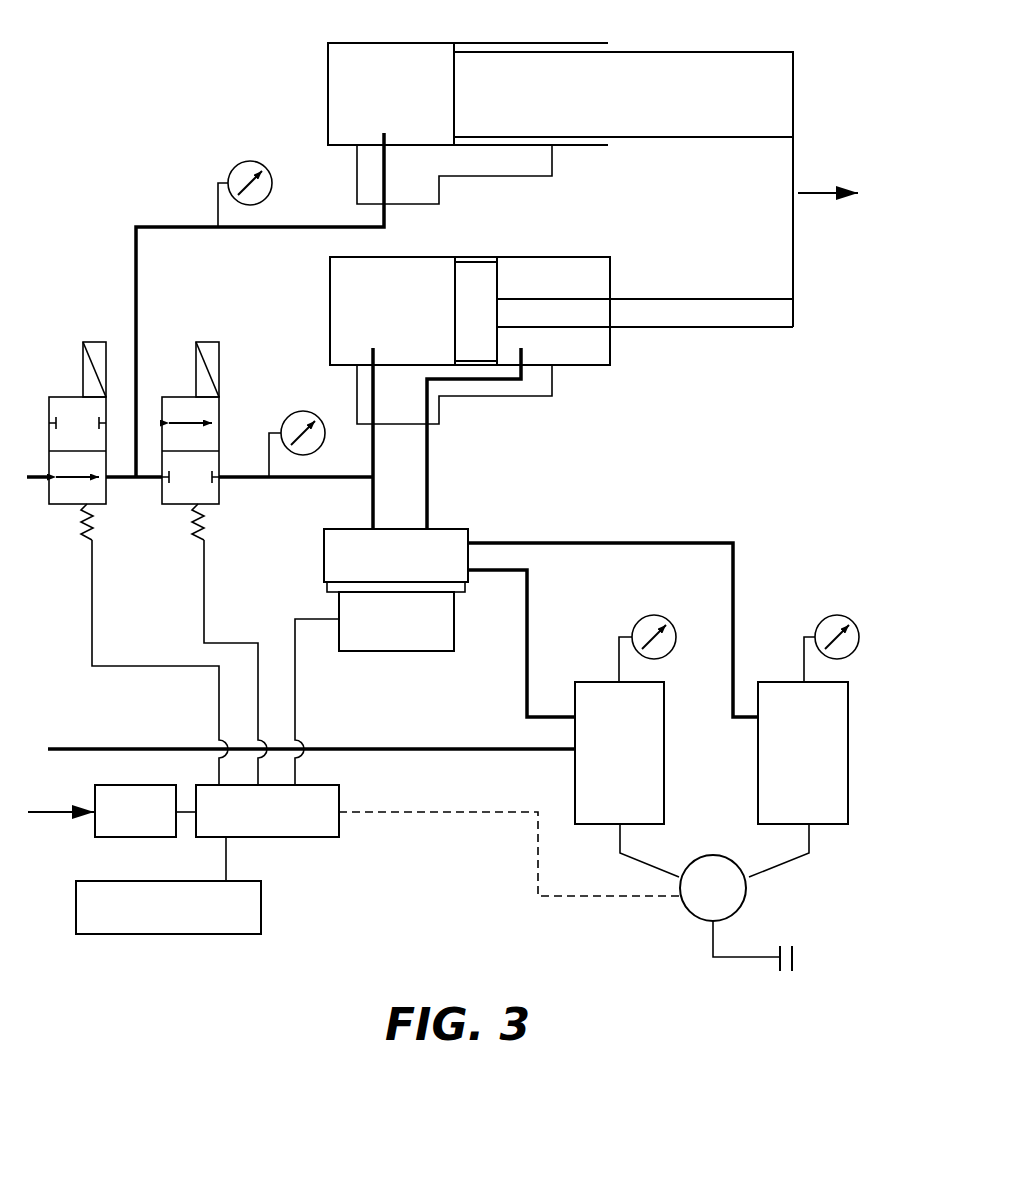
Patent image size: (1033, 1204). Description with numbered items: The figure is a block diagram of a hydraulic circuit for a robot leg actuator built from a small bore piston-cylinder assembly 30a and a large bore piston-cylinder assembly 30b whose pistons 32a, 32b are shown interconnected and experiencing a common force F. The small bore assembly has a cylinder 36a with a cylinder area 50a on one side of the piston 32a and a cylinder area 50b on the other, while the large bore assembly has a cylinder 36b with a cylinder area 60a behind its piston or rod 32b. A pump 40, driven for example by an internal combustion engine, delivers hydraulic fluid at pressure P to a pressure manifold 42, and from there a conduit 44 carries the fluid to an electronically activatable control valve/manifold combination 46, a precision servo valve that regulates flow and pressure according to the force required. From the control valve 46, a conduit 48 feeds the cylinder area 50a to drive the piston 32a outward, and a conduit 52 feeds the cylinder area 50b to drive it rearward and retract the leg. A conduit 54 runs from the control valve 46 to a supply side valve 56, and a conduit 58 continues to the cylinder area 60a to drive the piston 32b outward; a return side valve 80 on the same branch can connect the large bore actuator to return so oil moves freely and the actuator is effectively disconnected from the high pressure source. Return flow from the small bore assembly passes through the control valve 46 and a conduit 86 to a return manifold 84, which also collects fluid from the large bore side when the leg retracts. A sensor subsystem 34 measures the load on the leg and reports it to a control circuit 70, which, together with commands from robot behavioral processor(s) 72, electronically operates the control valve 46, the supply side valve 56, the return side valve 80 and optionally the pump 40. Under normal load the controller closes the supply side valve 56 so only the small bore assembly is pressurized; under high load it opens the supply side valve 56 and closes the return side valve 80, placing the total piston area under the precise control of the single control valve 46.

The large bore piston-cylinder assembly 30b is at (468, 74).
The cylinder area 60a is at (391, 94).
The piston or rod 32b is at (665, 189).
The cylinder 36b is at (390, 43).
The small bore piston-cylinder assembly 30a is at (470, 293).
The cylinder area 50a is at (392, 311).
The cylinder area 50b is at (553, 311).
The piston 32a is at (624, 311).
The cylinder 36a is at (330, 280).
The conduit 58 is at (136, 255).
The return side valve 80 is at (63, 397).
The supply side valve 56 is at (175, 397).
The conduit 54 is at (287, 480).
The conduit 48 is at (376, 437).
The conduit 52 is at (430, 437).
The control valve/manifold combination 46 is at (396, 590).
The conduit 44 is at (555, 543).
The conduit 86 is at (527, 682).
The return manifold 84 is at (627, 746).
The pressure manifold 42 is at (804, 746).
The pump 40 is at (693, 916).
The control circuit 70 is at (215, 710).
The sensor subsystem 34 is at (102, 806).
The robot behavioral processor(s) 72 is at (168, 907).